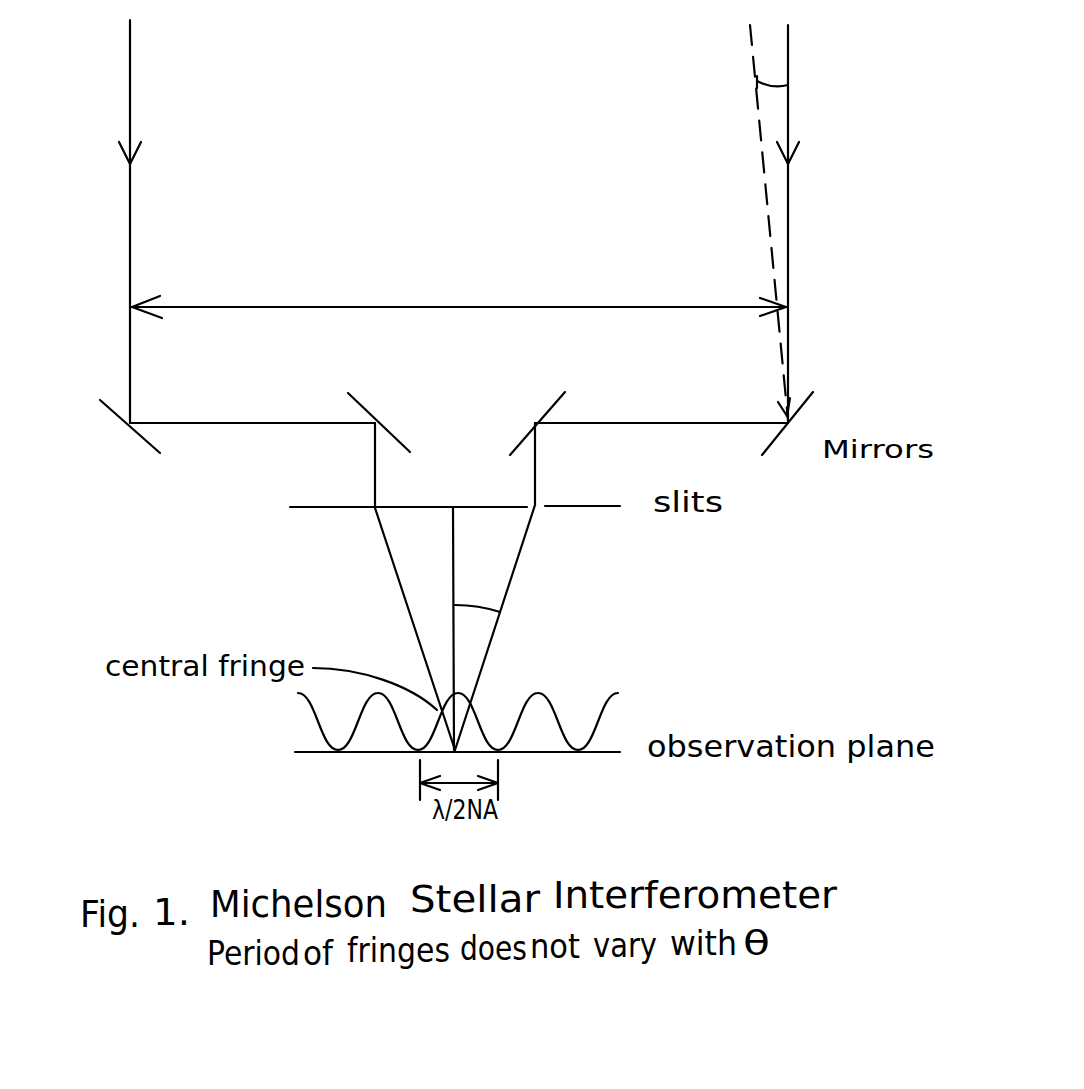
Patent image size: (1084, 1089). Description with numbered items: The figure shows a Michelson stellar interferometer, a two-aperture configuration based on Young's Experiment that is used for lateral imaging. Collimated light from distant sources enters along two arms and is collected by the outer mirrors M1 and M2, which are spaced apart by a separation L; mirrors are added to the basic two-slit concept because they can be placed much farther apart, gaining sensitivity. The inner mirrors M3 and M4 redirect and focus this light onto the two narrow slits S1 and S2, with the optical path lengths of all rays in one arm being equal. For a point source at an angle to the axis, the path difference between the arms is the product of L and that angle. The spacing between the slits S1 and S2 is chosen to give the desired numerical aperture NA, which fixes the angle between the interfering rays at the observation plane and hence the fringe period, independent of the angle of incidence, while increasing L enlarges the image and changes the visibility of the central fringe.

The outer mirror M1 is at (813, 423).
The outer mirror M2 is at (116, 433).
The inner mirror M3 is at (561, 412).
The inner mirror M4 is at (358, 414).
The slit S1 is at (517, 627).
The slit S2 is at (398, 629).
The separation between the outer mirrors L is at (459, 292).
The numerical aperture NA is at (504, 612).